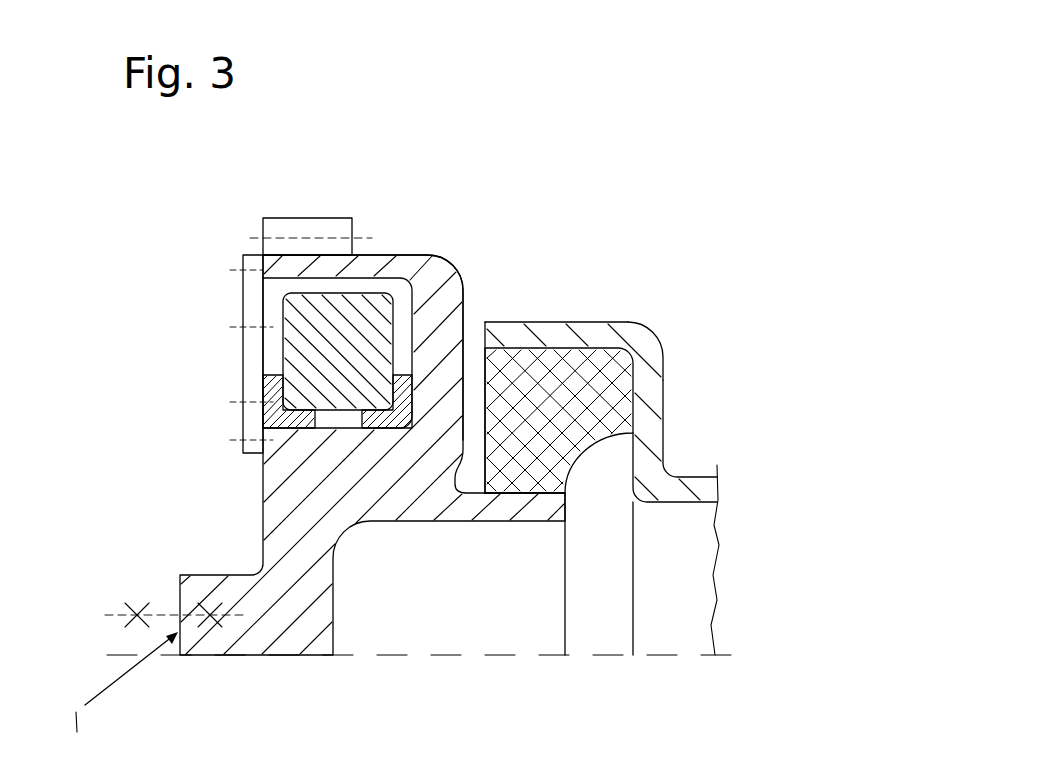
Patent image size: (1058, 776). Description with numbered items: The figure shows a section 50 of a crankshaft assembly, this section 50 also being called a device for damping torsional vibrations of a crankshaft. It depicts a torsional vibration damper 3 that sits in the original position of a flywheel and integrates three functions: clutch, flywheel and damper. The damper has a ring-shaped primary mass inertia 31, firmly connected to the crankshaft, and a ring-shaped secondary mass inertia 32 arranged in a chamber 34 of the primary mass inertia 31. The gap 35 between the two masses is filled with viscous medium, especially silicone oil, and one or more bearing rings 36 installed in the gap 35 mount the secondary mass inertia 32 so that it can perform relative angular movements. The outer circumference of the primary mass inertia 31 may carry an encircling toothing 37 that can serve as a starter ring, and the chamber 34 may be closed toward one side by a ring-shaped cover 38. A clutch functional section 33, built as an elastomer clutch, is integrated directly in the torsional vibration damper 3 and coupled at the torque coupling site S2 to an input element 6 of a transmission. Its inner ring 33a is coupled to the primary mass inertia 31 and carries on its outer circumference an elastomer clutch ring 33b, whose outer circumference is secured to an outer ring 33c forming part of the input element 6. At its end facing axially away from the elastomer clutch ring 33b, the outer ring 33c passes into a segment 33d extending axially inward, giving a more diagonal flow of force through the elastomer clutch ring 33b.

The torsional vibration damper 3 is at (258, 470).
The input element 6 is at (648, 410).
The primary mass inertia 31 is at (280, 500).
The secondary mass inertia 32 is at (378, 312).
The clutch functional section 33 is at (552, 410).
The inner ring 33a is at (524, 512).
The elastomer clutch ring 33b is at (633, 357).
The outer ring 33c is at (608, 337).
The segment 33d is at (652, 433).
The chamber 34 is at (400, 315).
The gap 35 is at (277, 330).
The bearing rings 36 is at (263, 407).
The toothing 37 is at (273, 230).
The cover 38 is at (255, 282).
The section 50 is at (596, 170).
The torque coupling site S2 is at (728, 461).